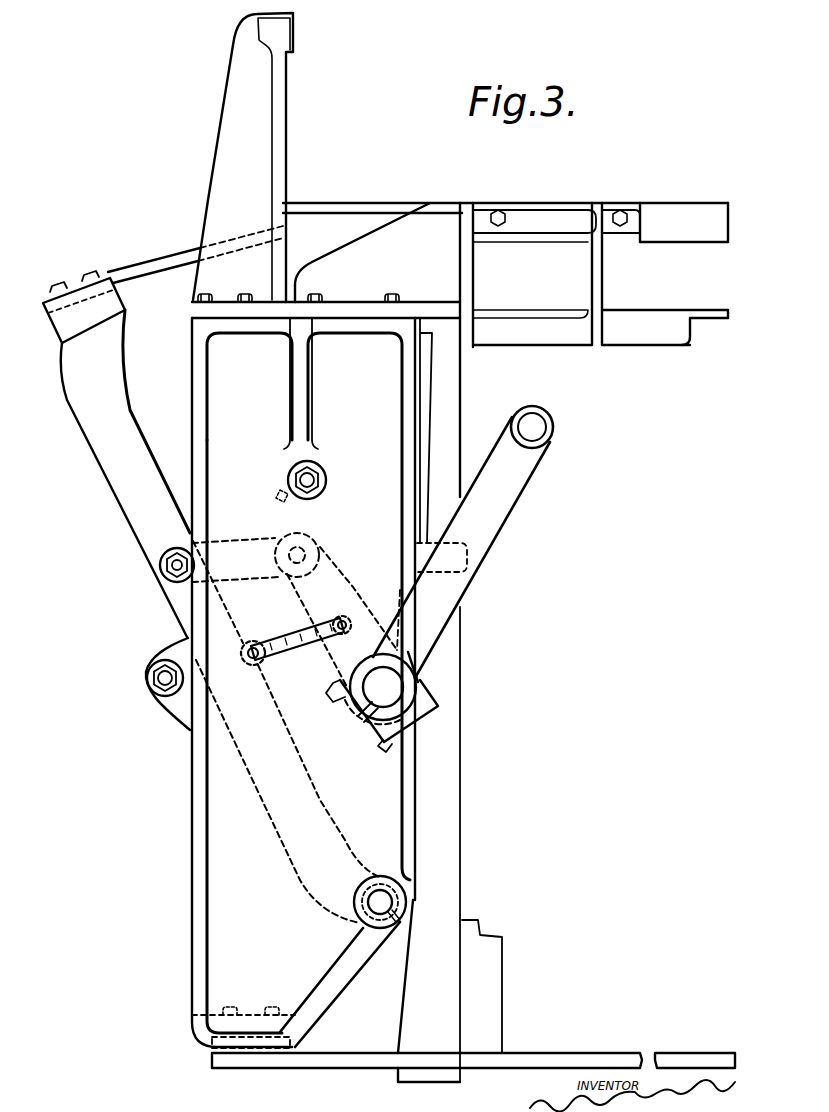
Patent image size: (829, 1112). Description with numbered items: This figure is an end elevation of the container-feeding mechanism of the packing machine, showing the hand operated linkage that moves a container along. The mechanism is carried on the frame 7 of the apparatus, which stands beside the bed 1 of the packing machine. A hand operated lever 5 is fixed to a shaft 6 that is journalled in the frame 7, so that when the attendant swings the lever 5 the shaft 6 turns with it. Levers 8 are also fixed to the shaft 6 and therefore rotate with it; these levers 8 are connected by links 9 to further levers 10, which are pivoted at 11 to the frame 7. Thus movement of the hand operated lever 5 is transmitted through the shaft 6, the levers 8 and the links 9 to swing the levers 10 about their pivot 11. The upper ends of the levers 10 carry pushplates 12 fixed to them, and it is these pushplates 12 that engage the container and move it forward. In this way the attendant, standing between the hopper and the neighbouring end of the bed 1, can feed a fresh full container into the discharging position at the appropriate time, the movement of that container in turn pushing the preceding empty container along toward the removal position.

The bed 1 is at (488, 1039).
The hand operated lever 5 is at (463, 593).
The shaft 6 is at (390, 688).
The frame 7 is at (220, 918).
The levers 8 is at (364, 571).
The links 9 is at (241, 526).
The levers 10 is at (127, 500).
The pivot 11 is at (387, 900).
The pushplates 12 is at (157, 262).